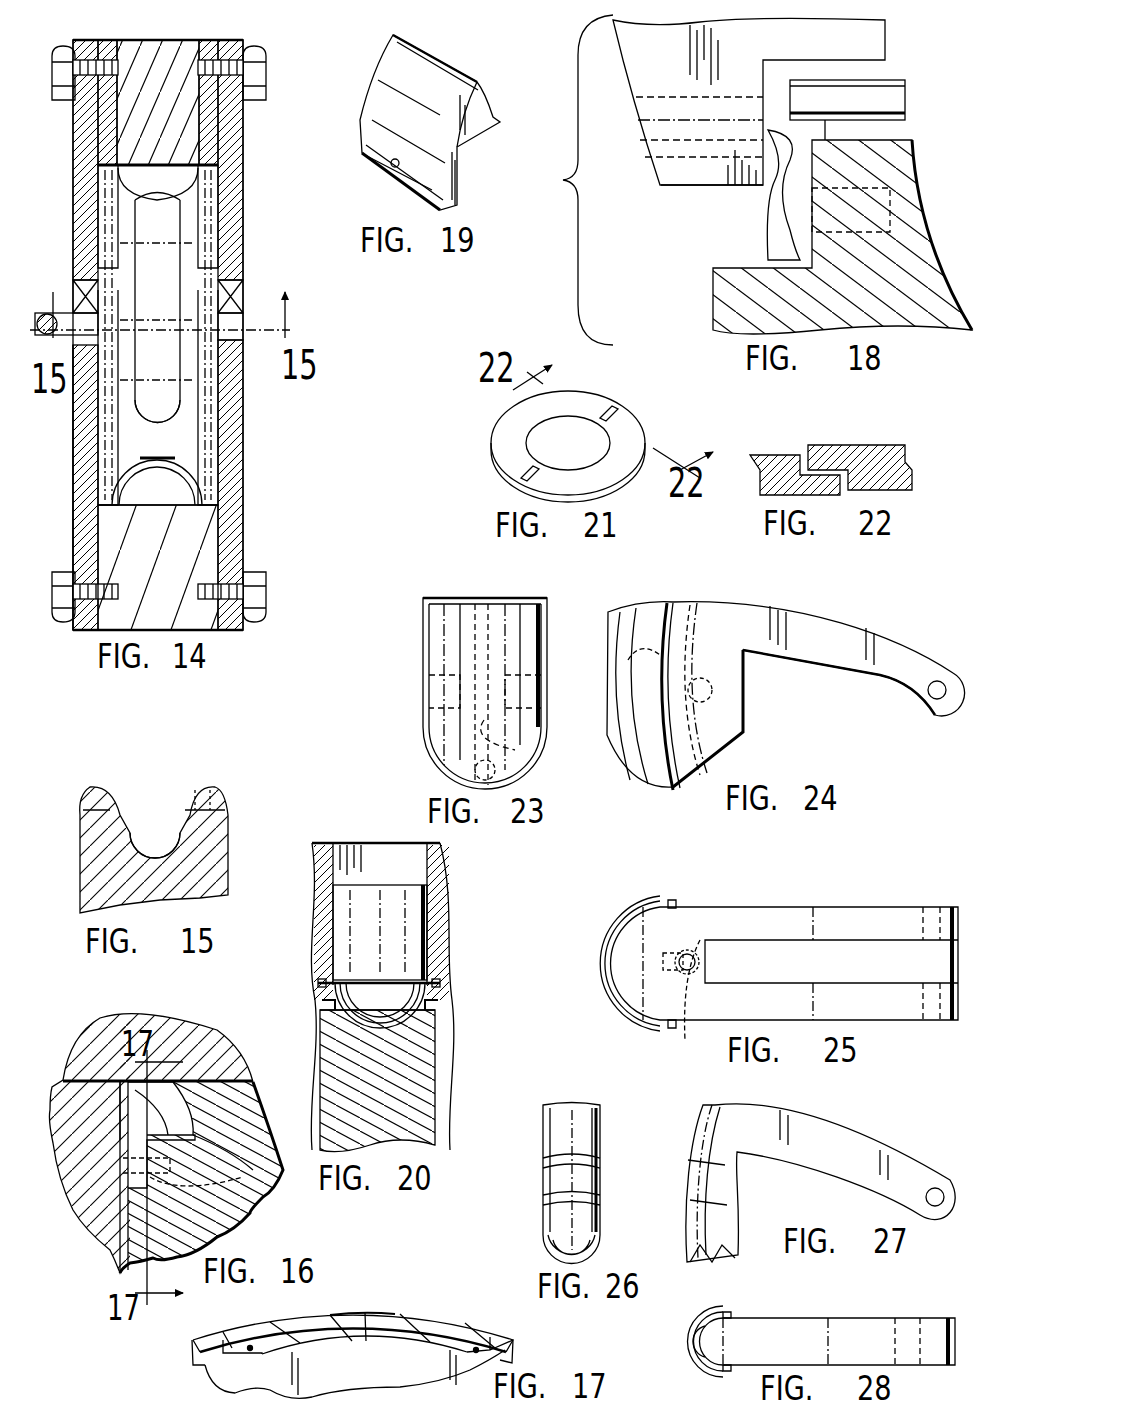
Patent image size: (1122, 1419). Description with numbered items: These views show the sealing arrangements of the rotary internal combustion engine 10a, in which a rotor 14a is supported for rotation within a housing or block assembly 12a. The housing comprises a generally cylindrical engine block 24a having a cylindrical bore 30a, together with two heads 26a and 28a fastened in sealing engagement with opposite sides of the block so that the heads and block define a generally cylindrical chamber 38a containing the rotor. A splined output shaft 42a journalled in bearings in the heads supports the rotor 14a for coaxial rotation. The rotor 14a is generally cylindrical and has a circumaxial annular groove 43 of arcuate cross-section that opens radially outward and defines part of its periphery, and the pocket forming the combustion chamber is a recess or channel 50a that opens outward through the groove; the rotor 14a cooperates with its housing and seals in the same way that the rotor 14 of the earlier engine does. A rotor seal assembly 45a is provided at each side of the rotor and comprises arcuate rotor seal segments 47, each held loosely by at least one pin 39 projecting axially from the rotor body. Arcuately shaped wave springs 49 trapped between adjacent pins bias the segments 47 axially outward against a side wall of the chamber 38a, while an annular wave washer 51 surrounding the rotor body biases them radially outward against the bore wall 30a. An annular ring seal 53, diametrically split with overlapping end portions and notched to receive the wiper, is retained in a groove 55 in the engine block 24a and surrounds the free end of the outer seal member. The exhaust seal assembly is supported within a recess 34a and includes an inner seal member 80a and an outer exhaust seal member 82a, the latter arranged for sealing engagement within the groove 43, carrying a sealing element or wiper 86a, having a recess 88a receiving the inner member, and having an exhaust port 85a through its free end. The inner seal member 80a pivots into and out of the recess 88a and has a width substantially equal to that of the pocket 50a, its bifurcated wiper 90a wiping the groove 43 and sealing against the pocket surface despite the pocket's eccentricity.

In FIG. 14, the rotary internal combustion engine 10a is at (292, 78).
In FIG. 14, the housing or block assembly 12a is at (262, 203).
In FIG. 20, the housing or block assembly 12a is at (462, 957).
In FIG. 14, the rotor 14 is at (170, 455).
In FIG. 18, the rotor 14a is at (871, 305).
In FIG. 15, the rotor 14a is at (174, 891).
In FIG. 17, the rotor 14a is at (366, 1379).
In FIG. 20, the rotor 14a is at (400, 1071).
In FIG. 14, the engine block 24a is at (172, 52).
In FIG. 14, the head or end plate 26a is at (70, 503).
In FIG. 14, the head or end plate 28a is at (232, 473).
In FIG. 14, the cylindrical bore 30a is at (198, 480).
In FIG. 20, the recess 34a is at (405, 862).
In FIG. 14, the cylindrical chamber 38a is at (170, 178).
In FIG. 16, the pin 39 is at (235, 1174).
In FIG. 17, the pin 39 is at (250, 1345).
In FIG. 14, the splined output shaft 42a is at (62, 318).
In FIG. 14, the circumaxial annular groove 43 is at (180, 520).
In FIG. 15, the circumaxial annular groove 43 is at (197, 815).
In FIG. 16, the circumaxial annular groove 43 is at (215, 1160).
In FIG. 20, the circumaxial annular groove 43 is at (440, 1042).
In FIG. 14, the rotor seal assembly 45a is at (230, 172).
In FIG. 18, the rotor seal assembly 45a is at (685, 222).
In FIG. 16, the rotor seal assembly 45a is at (117, 1121).
In FIG. 20, the rotor seal assembly 45a is at (318, 998).
In FIG. 19, the arcuate rotor seal segment 47 is at (477, 112).
In FIG. 18, the arcuate rotor seal segment 47 is at (655, 165).
In FIG. 16, the arcuate rotor seal segment 47 is at (182, 1112).
In FIG. 17, the arcuate rotor seal segment 47 is at (203, 1343).
In FIG. 18, the arcuately shaped wave spring 49 is at (772, 205).
In FIG. 16, the arcuately shaped wave spring 49 is at (118, 1138).
In FIG. 17, the arcuately shaped wave spring 49 is at (235, 1354).
In FIG. 14, the pocket or channel 50a is at (168, 390).
In FIG. 15, the pocket or channel 50a is at (180, 848).
In FIG. 18, the annular wave washer 51 is at (865, 80).
In FIG. 16, the annular wave washer 51 is at (200, 1124).
In FIG. 17, the annular wave washer 51 is at (438, 1318).
In FIG. 21, the annular ring seal 53 is at (505, 435).
In FIG. 22, the annular ring seal 53 is at (840, 445).
In FIG. 20, the annular ring seal 53 is at (340, 960).
In FIG. 20, the groove 55 is at (335, 978).
In FIG. 26, the inner seal member 80a is at (573, 1120).
In FIG. 27, the inner seal member 80a is at (872, 1135).
In FIG. 28, the inner seal member 80a is at (862, 1332).
In FIG. 23, the outer exhaust seal member 82a is at (440, 632).
In FIG. 24, the outer exhaust seal member 82a is at (806, 620).
In FIG. 20, the outer exhaust seal member 82a is at (402, 937).
In FIG. 25, the outer exhaust seal member 82a is at (772, 906).
In FIG. 23, the exhaust port 85a is at (528, 727).
In FIG. 24, the exhaust port 85a is at (690, 612).
In FIG. 25, the exhaust port 85a is at (683, 965).
In FIG. 23, the sealing element or wiper 86a is at (547, 634).
In FIG. 24, the sealing element or wiper 86a is at (668, 745).
In FIG. 20, the sealing element or wiper 86a is at (335, 868).
In FIG. 25, the sealing element or wiper 86a is at (660, 900).
In FIG. 24, the recess 88a is at (648, 662).
In FIG. 25, the recess 88a is at (688, 1030).
In FIG. 26, the sealing element or wiper 90a is at (603, 1160).
In FIG. 27, the sealing element or wiper 90a is at (735, 1140).
In FIG. 28, the sealing element or wiper 90a is at (710, 1315).